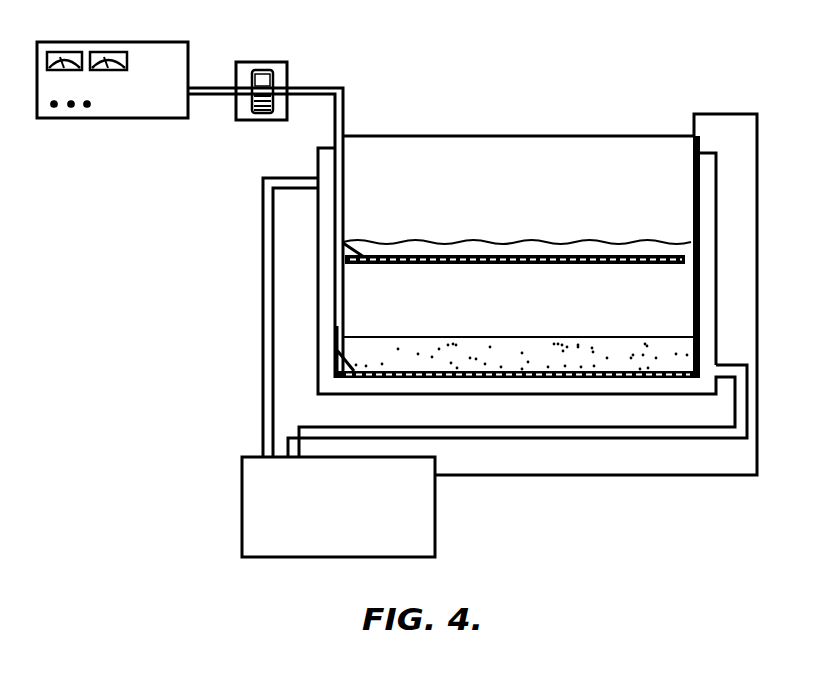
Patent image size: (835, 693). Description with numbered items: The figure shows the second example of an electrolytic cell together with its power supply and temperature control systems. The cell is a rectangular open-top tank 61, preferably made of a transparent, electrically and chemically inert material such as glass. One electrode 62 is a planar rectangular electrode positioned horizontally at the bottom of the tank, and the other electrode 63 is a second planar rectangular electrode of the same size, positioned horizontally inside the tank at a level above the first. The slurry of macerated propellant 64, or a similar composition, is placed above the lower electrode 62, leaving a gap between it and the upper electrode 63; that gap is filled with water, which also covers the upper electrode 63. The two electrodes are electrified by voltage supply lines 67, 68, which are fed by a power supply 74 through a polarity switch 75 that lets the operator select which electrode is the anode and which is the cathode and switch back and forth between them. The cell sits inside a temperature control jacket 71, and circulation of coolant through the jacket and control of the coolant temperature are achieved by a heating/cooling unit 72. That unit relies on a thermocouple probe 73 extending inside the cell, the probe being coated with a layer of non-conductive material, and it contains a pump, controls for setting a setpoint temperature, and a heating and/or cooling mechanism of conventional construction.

The open-top tank 61 is at (500, 136).
The electrode 62 is at (627, 380).
The electrode 63 is at (407, 255).
The slurry of macerated propellant 64 is at (627, 362).
The voltage supply line 67 is at (334, 117).
The voltage supply line 68 is at (344, 104).
The temperature control jacket 71 is at (707, 227).
The heating/cooling unit 72 is at (437, 522).
The thermocouple probe 73 is at (694, 133).
The power supply 74 is at (176, 18).
The polarity switch 75 is at (285, 63).